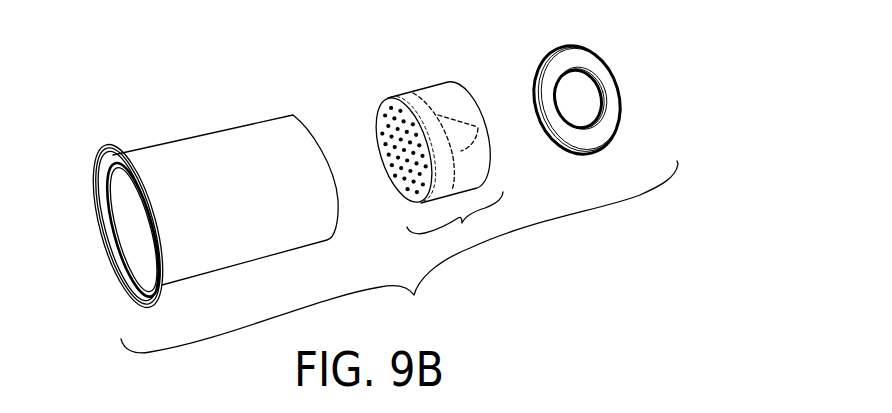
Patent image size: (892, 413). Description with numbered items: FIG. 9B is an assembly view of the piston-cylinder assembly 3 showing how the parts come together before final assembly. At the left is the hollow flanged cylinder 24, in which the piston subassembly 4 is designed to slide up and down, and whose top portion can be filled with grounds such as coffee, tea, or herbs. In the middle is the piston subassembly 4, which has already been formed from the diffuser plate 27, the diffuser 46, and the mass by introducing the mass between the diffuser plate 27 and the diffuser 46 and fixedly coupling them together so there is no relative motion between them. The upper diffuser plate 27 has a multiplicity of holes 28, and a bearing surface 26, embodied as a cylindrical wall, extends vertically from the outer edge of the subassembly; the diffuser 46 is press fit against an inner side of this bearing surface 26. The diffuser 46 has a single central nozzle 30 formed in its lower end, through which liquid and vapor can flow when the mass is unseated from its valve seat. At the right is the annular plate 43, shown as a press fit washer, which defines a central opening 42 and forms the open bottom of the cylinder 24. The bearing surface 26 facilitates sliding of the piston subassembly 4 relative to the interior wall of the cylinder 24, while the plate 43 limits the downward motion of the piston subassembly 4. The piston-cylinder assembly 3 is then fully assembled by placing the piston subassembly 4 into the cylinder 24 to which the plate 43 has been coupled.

The piston-cylinder assembly 3 is at (399, 257).
The piston subassembly 4 is at (455, 220).
The cylinder 24 is at (183, 143).
The bearing surface 26 is at (426, 118).
The diffuser plate 27 is at (376, 122).
The holes 28 is at (388, 98).
The nozzle 30 is at (480, 125).
The central opening 42 is at (588, 99).
The annular plate 43 is at (593, 82).
The diffuser 46 is at (461, 151).